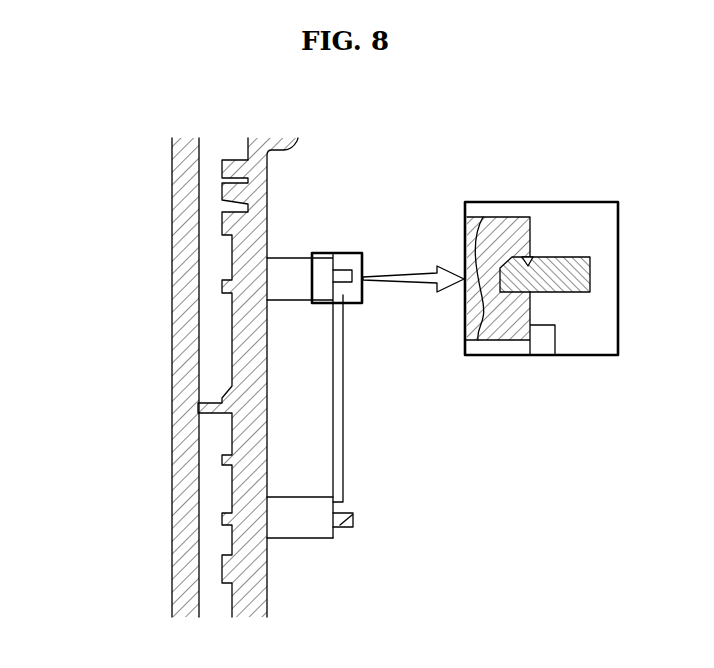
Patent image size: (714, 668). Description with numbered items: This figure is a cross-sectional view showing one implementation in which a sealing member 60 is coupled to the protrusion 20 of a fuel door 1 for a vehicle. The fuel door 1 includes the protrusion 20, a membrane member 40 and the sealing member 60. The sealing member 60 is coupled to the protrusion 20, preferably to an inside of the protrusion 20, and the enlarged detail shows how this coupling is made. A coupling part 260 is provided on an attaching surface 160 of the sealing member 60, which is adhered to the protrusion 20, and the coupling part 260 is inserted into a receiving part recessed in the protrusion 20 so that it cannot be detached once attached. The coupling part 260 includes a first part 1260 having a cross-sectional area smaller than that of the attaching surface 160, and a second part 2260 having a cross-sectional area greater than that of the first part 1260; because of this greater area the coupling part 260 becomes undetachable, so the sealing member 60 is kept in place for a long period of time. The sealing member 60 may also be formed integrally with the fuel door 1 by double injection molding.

The fuel door 1 is at (156, 335).
The protrusion 20 is at (303, 530).
The membrane member 40 is at (337, 438).
The sealing member 60 is at (343, 276).
The attaching surface 160 is at (548, 252).
The coupling part 260 is at (480, 117).
The first part 1260 is at (518, 256).
The second part 2260 is at (521, 248).